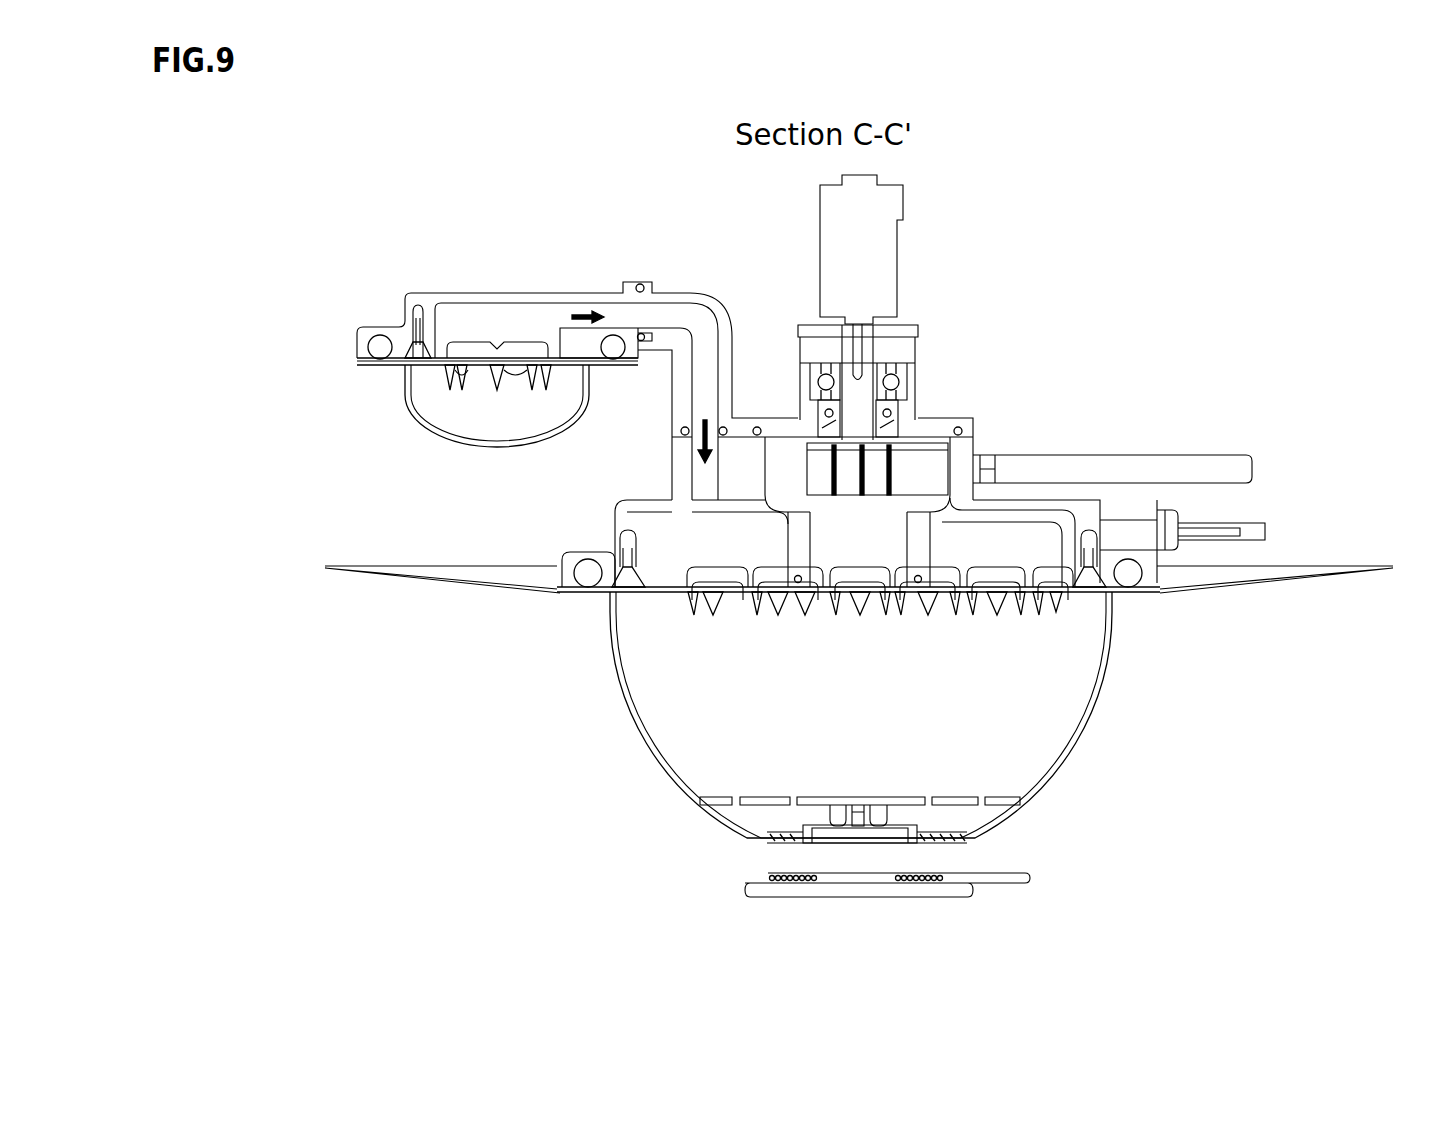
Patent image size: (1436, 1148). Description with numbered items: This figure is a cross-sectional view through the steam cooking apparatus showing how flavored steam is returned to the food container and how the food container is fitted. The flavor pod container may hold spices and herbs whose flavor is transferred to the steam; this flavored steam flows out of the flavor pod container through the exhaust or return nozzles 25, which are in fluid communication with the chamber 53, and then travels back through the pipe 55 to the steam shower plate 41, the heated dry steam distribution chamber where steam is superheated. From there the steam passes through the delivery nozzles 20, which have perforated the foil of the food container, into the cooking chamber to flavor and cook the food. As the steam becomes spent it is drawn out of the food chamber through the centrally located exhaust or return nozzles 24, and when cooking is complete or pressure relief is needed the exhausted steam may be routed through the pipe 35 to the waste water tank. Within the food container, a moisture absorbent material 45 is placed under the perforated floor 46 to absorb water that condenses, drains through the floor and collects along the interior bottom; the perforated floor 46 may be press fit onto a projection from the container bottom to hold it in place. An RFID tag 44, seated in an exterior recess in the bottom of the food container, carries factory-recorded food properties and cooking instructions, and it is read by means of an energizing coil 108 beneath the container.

The delivery nozzles 20 is at (688, 599).
The exhaust or return nozzles 24 is at (892, 610).
The exhaust or return nozzles 25 is at (443, 375).
The pipe 35 is at (1083, 465).
The dry steam distribution chamber 41 is at (671, 544).
The RFID tag 44 is at (841, 845).
The moisture absorbent material 45 is at (772, 832).
The perforated floor 46 is at (765, 812).
The chamber 53 is at (531, 317).
The pipe 55 is at (677, 313).
The energizing coil 108 is at (943, 875).